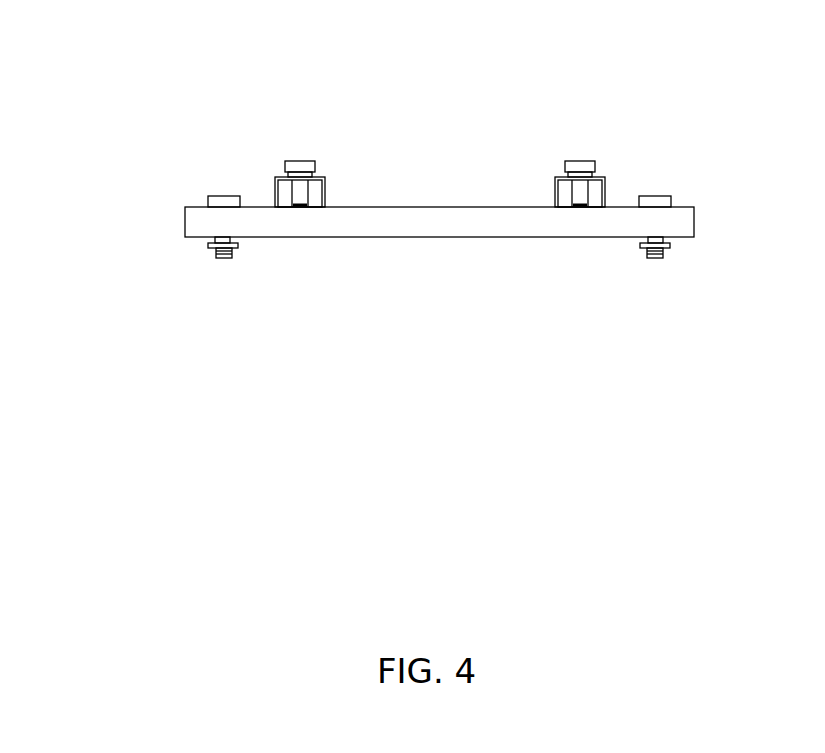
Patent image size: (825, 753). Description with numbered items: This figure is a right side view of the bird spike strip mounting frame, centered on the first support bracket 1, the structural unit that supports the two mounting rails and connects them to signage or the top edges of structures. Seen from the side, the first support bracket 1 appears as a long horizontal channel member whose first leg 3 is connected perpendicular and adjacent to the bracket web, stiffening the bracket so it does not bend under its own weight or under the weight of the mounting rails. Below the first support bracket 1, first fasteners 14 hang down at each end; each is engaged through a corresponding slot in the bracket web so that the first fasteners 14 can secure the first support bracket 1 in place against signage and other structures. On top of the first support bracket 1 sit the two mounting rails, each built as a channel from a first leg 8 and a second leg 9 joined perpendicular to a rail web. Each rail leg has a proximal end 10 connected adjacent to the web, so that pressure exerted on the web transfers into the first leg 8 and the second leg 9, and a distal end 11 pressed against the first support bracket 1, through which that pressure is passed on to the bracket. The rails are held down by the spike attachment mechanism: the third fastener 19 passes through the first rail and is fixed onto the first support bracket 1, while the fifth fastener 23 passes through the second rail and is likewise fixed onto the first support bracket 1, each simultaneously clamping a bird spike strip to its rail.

The first support bracket 1 is at (163, 177).
The first leg 3 is at (443, 222).
The first leg 8 is at (324, 193).
The second leg 9 is at (275, 190).
The proximal end 10 is at (277, 177).
The distal end 11 is at (276, 207).
The first fasteners 14 is at (222, 258).
The third fastener 19 is at (297, 161).
The fifth fastener 23 is at (580, 161).